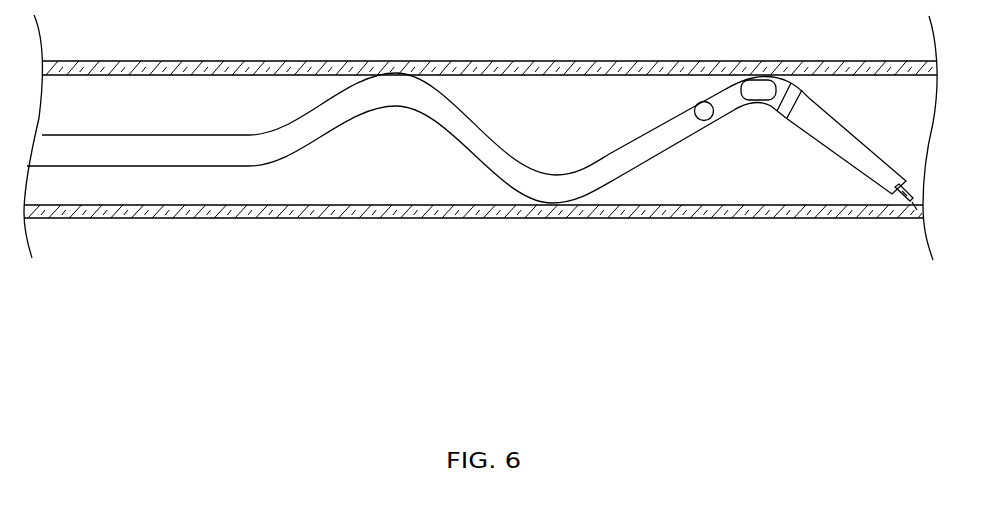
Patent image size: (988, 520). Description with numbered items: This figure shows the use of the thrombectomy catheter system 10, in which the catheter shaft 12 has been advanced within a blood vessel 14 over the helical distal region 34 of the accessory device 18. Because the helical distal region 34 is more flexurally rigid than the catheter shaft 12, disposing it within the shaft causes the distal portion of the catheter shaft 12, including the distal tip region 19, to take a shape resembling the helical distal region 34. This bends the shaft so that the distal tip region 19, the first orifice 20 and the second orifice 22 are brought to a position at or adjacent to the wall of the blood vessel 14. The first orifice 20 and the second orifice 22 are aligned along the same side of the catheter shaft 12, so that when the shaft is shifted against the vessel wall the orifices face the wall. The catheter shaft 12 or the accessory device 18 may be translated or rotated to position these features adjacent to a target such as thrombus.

The thrombectomy catheter 10 is at (470, 141).
The catheter shaft 12 is at (553, 190).
The blood vessel 14 is at (320, 76).
The accessory device 18 is at (898, 201).
The distal tip region 19 is at (849, 142).
The first orifice 20 is at (760, 82).
The second orifice 22 is at (704, 103).
The helical distal region 34 is at (915, 224).